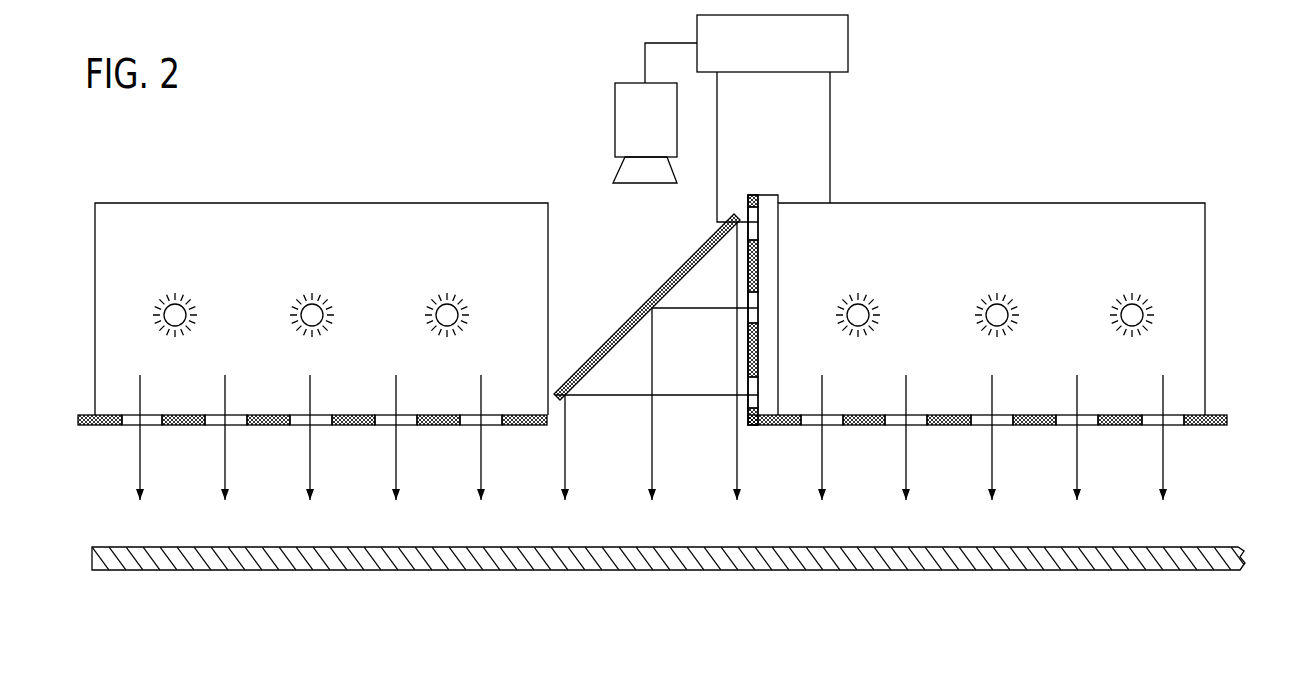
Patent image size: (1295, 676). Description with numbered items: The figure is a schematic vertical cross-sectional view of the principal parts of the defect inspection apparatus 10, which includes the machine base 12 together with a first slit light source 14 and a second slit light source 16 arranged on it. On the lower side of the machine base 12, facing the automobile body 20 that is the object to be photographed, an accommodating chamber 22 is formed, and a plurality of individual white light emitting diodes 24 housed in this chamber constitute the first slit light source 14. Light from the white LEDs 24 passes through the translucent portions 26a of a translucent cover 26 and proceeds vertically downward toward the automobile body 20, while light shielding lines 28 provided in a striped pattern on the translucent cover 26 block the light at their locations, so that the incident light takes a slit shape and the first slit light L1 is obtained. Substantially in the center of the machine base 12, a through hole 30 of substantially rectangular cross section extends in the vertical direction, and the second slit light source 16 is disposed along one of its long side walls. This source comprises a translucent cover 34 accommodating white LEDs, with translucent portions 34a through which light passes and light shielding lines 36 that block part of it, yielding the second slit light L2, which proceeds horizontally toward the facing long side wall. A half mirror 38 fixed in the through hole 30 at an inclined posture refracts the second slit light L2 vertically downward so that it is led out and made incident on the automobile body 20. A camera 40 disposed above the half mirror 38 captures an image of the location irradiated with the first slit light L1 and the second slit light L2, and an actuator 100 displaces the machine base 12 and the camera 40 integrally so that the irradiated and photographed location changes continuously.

The defect inspection apparatus 10 is at (1058, 122).
The machine base 12 is at (1208, 203).
The first slit light source 14 is at (470, 272).
The second slit light source 16 is at (762, 188).
The automobile body 20 is at (1153, 572).
The accommodating chamber 22 is at (130, 230).
The white light emitting diodes 24 is at (175, 293).
The translucent cover 26 is at (358, 410).
The translucent portions 26a is at (131, 427).
The light shielding lines 28 is at (178, 427).
The through hole 30 is at (552, 246).
The translucent cover 34 is at (764, 196).
The translucent portions 34a is at (760, 216).
The light shielding lines 36 is at (760, 261).
The half mirror 38 is at (672, 283).
The camera 40 is at (627, 103).
The actuator 100 is at (850, 32).
The first slit light L1 is at (144, 478).
The second slit light L2 is at (569, 478).